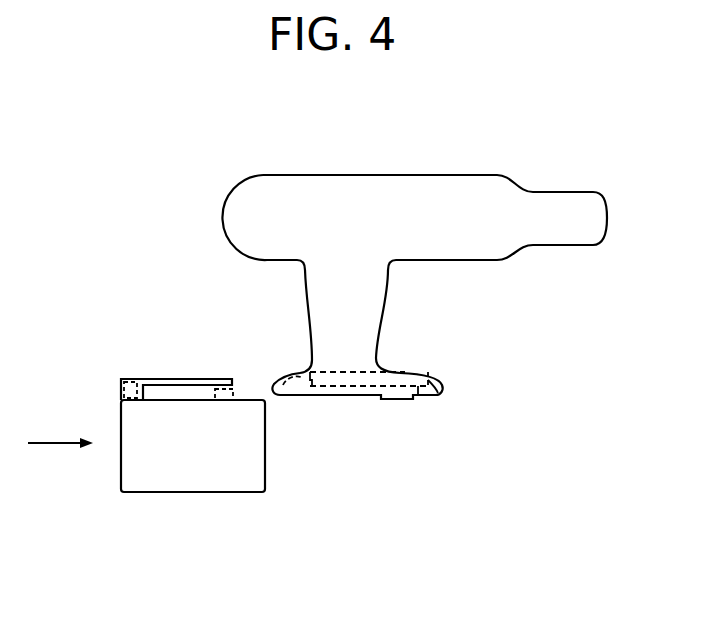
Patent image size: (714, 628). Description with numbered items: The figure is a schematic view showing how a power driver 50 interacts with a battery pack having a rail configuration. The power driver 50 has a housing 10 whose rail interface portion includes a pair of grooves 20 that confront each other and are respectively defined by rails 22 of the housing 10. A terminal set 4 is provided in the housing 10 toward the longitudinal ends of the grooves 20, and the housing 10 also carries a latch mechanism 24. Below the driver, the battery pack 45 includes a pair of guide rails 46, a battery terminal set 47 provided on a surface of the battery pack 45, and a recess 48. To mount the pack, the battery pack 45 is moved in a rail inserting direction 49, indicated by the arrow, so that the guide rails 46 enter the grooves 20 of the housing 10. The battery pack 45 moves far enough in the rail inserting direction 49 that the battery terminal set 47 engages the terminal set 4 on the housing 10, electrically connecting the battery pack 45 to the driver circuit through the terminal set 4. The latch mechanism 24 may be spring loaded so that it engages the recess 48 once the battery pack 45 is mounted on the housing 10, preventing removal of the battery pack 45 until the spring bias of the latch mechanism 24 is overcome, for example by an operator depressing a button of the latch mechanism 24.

The terminal set 4 is at (432, 378).
The housing 10 is at (300, 173).
The grooves 20 is at (376, 388).
The rails 22 is at (341, 385).
The latch mechanism 24 is at (283, 381).
The battery pack 45 is at (223, 492).
The guide rails 46 is at (159, 379).
The battery terminal set 47 is at (235, 388).
The recess 48 is at (118, 405).
The rail inserting direction 49 is at (60, 440).
The power driver 50 is at (511, 133).